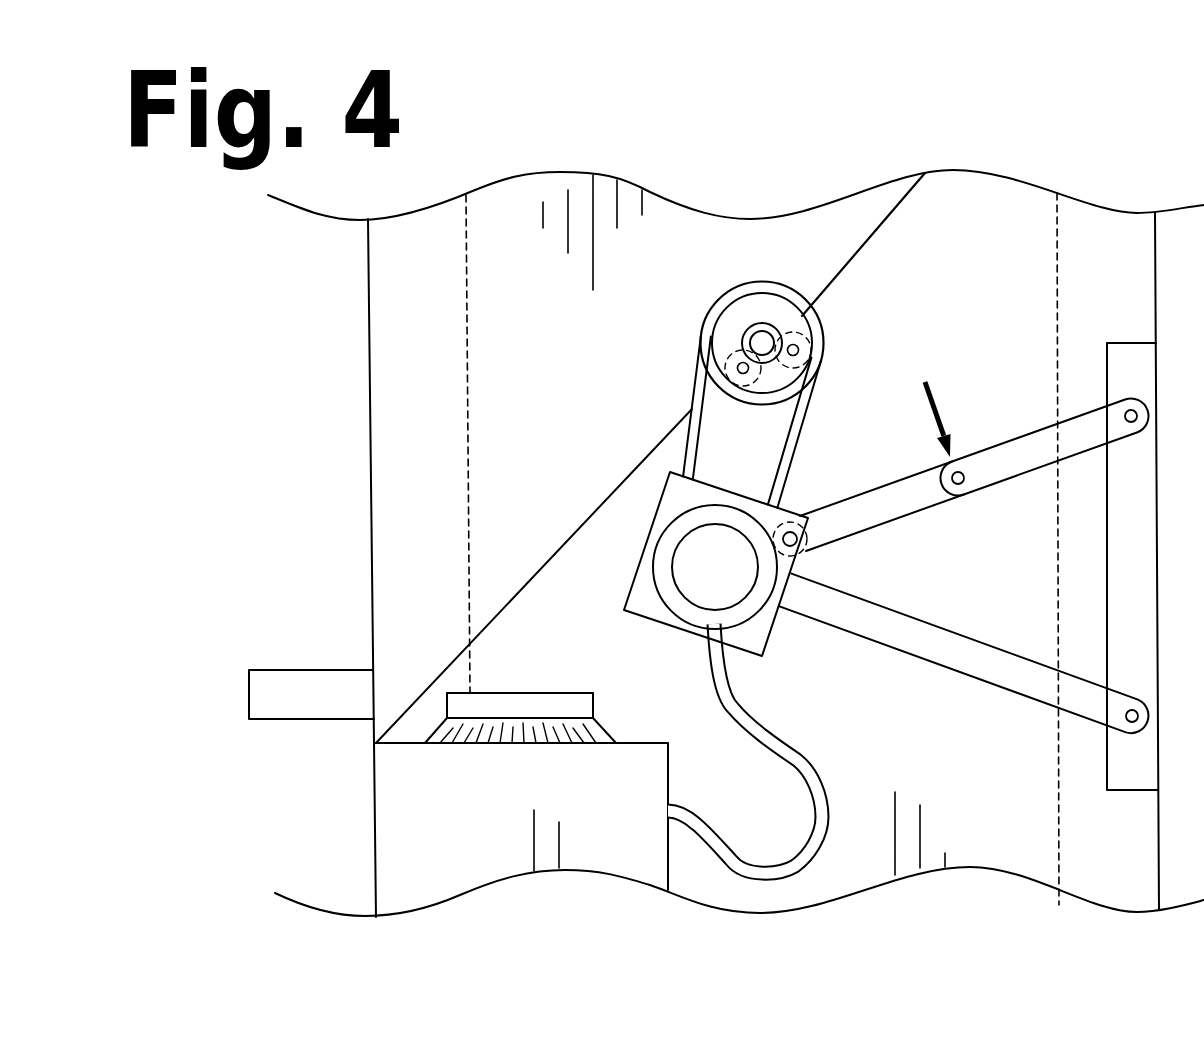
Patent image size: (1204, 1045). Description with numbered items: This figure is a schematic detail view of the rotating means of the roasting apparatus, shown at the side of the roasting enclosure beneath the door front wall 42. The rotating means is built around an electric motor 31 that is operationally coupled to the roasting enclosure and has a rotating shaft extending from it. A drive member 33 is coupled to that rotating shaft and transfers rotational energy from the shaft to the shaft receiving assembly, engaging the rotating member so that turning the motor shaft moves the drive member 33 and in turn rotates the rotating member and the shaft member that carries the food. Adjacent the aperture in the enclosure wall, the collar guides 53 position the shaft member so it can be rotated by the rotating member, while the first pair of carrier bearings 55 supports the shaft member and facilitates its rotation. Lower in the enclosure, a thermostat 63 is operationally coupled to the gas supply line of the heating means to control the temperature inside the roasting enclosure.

The electric motor 31 is at (730, 580).
The drive member 33 is at (800, 407).
The door front wall 42 is at (578, 407).
The collar guides 53 is at (762, 335).
The first pair of carrier bearings 55 is at (795, 332).
The thermostat 63 is at (513, 693).